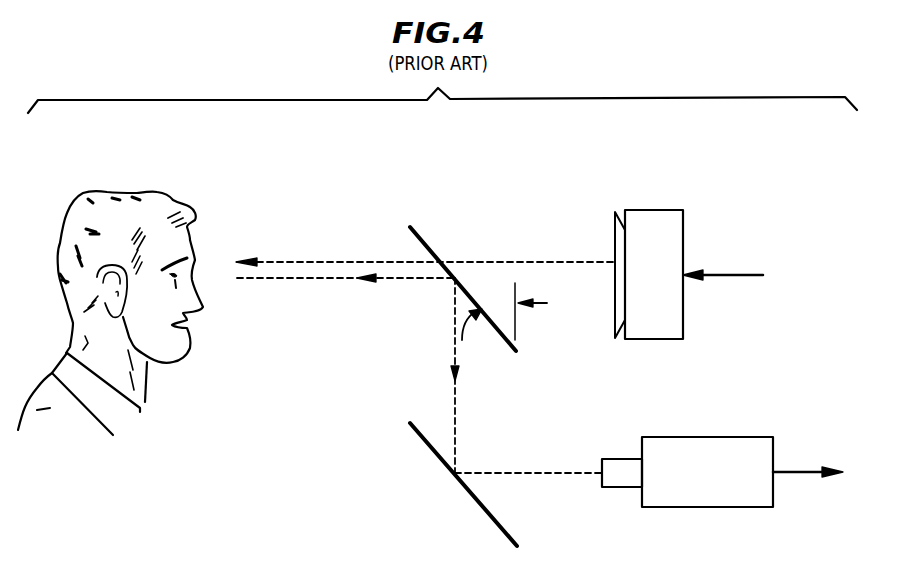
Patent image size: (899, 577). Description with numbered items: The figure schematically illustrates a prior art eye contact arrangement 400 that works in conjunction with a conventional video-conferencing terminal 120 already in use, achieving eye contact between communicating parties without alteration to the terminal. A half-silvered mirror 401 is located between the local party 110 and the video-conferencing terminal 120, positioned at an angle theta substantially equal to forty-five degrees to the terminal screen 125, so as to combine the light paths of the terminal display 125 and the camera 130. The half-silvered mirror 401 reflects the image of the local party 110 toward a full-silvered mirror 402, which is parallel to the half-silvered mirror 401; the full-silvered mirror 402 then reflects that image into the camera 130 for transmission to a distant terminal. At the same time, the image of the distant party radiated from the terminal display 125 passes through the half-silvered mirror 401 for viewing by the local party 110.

The local party 110 is at (93, 182).
The eye contact arrangement 400 is at (296, 168).
The half-silvered mirror 401 is at (433, 247).
The full-silvered mirror 402 is at (435, 453).
The video-conferencing terminal 120 is at (657, 210).
The terminal display 125 is at (615, 230).
The camera 130 is at (738, 437).